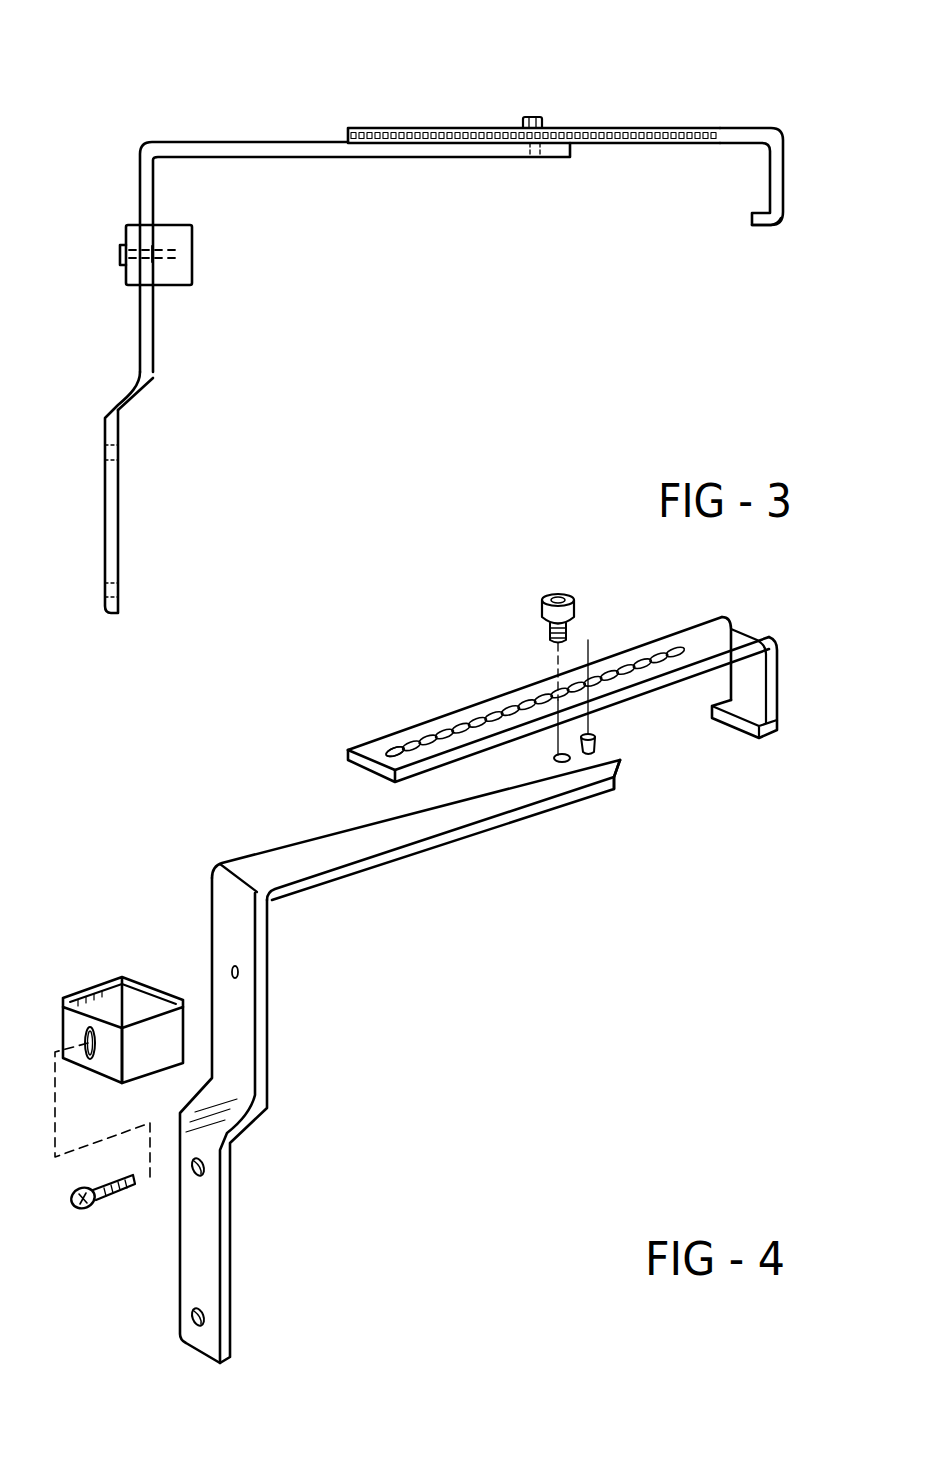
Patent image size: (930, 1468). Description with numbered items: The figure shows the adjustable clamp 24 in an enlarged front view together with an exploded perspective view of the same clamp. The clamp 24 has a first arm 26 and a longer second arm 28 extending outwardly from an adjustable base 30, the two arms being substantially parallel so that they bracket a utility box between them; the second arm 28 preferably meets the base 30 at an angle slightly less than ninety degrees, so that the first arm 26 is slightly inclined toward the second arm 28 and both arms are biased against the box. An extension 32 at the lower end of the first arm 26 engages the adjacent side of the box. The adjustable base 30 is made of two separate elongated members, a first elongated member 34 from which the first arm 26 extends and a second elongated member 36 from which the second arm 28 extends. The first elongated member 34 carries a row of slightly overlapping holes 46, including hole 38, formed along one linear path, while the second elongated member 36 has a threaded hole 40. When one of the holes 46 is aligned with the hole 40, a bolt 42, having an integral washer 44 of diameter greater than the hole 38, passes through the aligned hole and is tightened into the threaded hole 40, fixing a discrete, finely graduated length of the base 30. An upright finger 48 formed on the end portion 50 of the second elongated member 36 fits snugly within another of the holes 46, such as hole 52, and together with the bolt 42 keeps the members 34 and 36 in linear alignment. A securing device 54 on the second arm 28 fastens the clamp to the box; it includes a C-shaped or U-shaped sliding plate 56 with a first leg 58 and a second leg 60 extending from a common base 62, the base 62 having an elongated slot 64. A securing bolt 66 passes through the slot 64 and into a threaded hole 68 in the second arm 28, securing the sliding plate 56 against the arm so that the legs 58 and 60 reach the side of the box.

In FIG. 3, the adjustable clamp 24 is at (205, 98).
In FIG. 4, the adjustable clamp 24 is at (688, 895).
In FIG. 3, the first arm 26 is at (783, 182).
In FIG. 4, the first arm 26 is at (777, 692).
In FIG. 3, the second arm 28 is at (157, 332).
In FIG. 4, the second arm 28 is at (262, 1013).
In FIG. 3, the adjustable base 30 is at (553, 163).
In FIG. 4, the adjustable base 30 is at (532, 580).
In FIG. 3, the extension 32 is at (755, 230).
In FIG. 3, the first elongated member 34 is at (534, 135).
In FIG. 4, the first elongated member 34 is at (653, 638).
In FIG. 3, the second elongated member 36 is at (355, 257).
In FIG. 4, the second elongated member 36 is at (410, 840).
In FIG. 4, the hole 38 is at (553, 693).
In FIG. 4, the hole 40 is at (565, 765).
In FIG. 3, the bolt 42 is at (535, 117).
In FIG. 4, the bolt 42 is at (570, 597).
In FIG. 4, the washer 44 is at (544, 618).
In FIG. 4, the holes 46 is at (395, 747).
In FIG. 4, the upright finger 48 is at (600, 736).
In FIG. 4, the end portion 50 is at (612, 770).
In FIG. 4, the hole 52 is at (594, 680).
In FIG. 3, the securing device 54 is at (110, 242).
In FIG. 4, the securing device 54 is at (77, 980).
In FIG. 4, the sliding plate 56 is at (122, 977).
In FIG. 4, the first leg 58 is at (115, 1000).
In FIG. 4, the second leg 60 is at (150, 1057).
In FIG. 4, the base 62 is at (110, 1053).
In FIG. 4, the elongated slot 64 is at (90, 1057).
In FIG. 4, the securing bolt 66 is at (90, 1210).
In FIG. 4, the threaded hole 68 is at (240, 970).